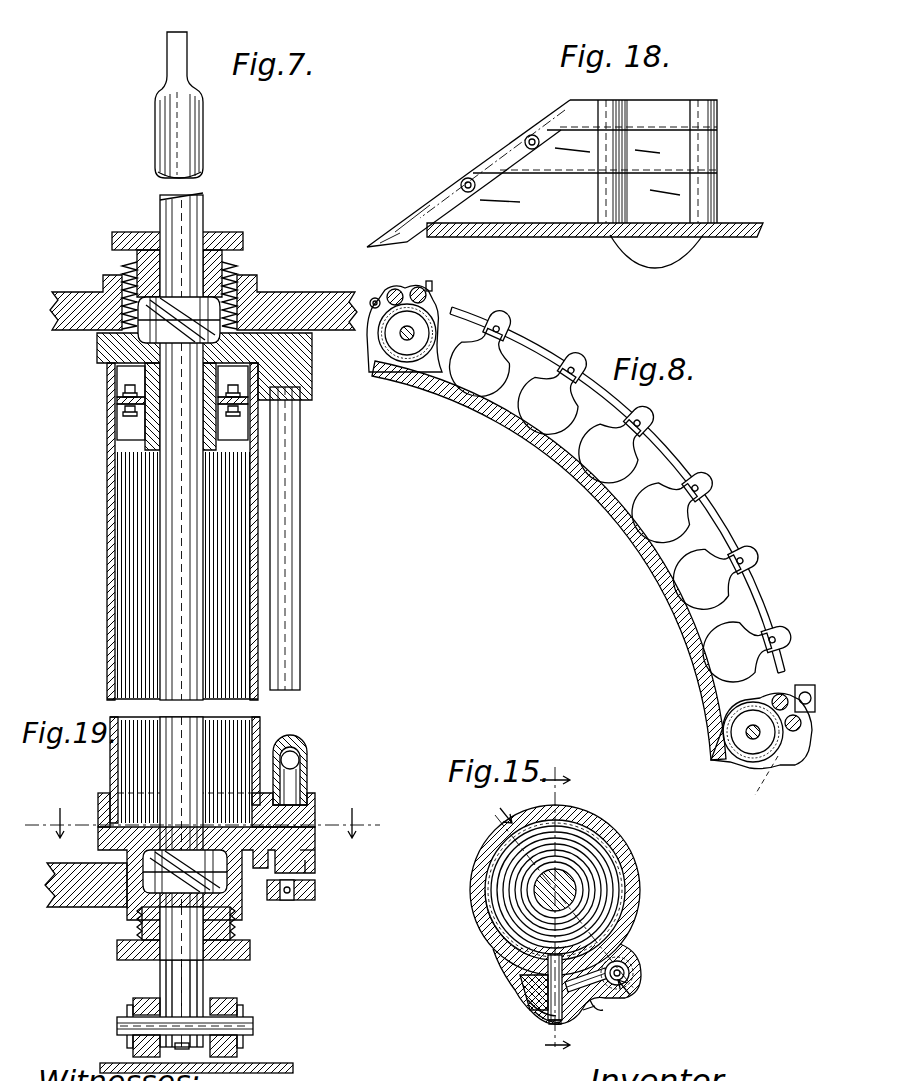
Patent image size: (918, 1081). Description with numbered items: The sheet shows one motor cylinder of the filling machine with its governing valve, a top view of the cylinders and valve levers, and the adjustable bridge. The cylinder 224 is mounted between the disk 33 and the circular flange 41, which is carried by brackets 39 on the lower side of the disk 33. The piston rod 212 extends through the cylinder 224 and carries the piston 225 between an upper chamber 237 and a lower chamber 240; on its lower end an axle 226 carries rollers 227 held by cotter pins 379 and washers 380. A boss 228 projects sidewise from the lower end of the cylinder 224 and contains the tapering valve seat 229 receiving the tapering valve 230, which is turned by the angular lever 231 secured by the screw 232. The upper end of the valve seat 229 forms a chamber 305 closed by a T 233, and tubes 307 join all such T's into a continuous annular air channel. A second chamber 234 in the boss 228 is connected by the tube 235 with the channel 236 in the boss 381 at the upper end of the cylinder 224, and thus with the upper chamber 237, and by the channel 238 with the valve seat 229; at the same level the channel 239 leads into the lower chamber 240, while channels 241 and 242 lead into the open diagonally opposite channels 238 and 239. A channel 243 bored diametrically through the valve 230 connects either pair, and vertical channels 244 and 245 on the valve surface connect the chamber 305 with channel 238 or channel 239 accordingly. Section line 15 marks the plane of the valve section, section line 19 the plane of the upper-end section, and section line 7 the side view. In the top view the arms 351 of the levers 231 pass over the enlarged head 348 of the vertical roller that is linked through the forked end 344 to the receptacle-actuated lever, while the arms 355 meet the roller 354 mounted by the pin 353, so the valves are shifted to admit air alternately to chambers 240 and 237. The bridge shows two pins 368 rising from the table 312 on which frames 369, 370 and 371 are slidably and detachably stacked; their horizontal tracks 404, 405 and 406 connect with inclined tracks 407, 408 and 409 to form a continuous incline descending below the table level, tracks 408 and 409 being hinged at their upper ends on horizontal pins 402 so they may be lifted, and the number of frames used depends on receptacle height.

In FIG. 7, the piston rod 212 is at (204, 221).
In FIG. 8, the piston rod 212 is at (412, 342).
In FIG. 15, the piston rod 212 is at (577, 877).
In FIG. 7, the disk 33 is at (273, 298).
In FIG. 7, the boss 381 is at (304, 348).
In FIG. 7, the cylinder 224 is at (140, 533).
In FIG. 15, the cylinder 224 is at (607, 885).
In FIG. 7, the upper chamber 237 is at (126, 383).
In FIG. 7, the piston 225 is at (147, 426).
In FIG. 7, the channel 236 is at (272, 382).
In FIG. 7, the tube 235 is at (287, 594).
In FIG. 15, the tube 235 is at (628, 967).
In FIG. 19, the lower chamber 240 is at (130, 774).
In FIG. 8, the lower chamber 240 is at (398, 362).
In FIG. 19, the T 233 is at (308, 760).
In FIG. 8, the T 233 is at (506, 323).
In FIG. 19, the chamber 305 is at (288, 803).
In FIG. 19, the section line 15— 15 is at (204, 822).
In FIG. 19, the tapering valve 230 is at (297, 839).
In FIG. 19, the boss 228 is at (313, 853).
In FIG. 15, the boss 228 is at (601, 999).
In FIG. 19, the tapering valve seat 229 is at (310, 870).
In FIG. 19, the angular lever 231 is at (313, 896).
In FIG. 19, the screw 232 is at (286, 906).
In FIG. 19, the circular flange 41 is at (86, 907).
In FIG. 19, the rollers 227 is at (140, 1000).
In FIG. 19, the cotter pins 379 is at (127, 1020).
In FIG. 19, the axle 226 is at (254, 1028).
In FIG. 19, the washers 380 is at (131, 1053).
In FIG. 18, the table 312 is at (745, 233).
In FIG. 18, the frame 369 is at (672, 108).
In FIG. 18, the frame 370 is at (710, 154).
In FIG. 18, the frame 371 is at (705, 201).
In FIG. 18, the horizontal track 405 is at (630, 128).
In FIG. 18, the horizontal track 404 is at (650, 105).
In FIG. 18, the inclined track 407 is at (565, 105).
In FIG. 18, the inclined track 408 is at (493, 157).
In FIG. 18, the horizontal pins 402 is at (530, 137).
In FIG. 18, the inclined track 409 is at (418, 207).
In FIG. 18, the horizontal track 406 is at (567, 177).
In FIG. 18, the pins 368 is at (656, 262).
In FIG. 8, the brackets 39 is at (546, 462).
In FIG. 8, the tubes 307 is at (715, 523).
In FIG. 8, the pin 353 is at (395, 289).
In FIG. 8, the roller 354 is at (372, 298).
In FIG. 8, the arms of angular levers 351 is at (433, 286).
In FIG. 15, the arms of angular levers 351 is at (590, 1013).
In FIG. 8, the arms of angular levers 355 is at (559, 573).
In FIG. 15, the arms of angular levers 355 is at (515, 947).
In FIG. 8, the forked end 344 is at (796, 746).
In FIG. 8, the enlarged head 348 is at (788, 703).
In FIG. 15, the vertical channel 245 is at (628, 940).
In FIG. 15, the channel 239 is at (545, 970).
In FIG. 15, the vertical channel 244 is at (525, 993).
In FIG. 15, the channel 238 is at (620, 958).
In FIG. 15, the chamber 234 is at (636, 979).
In FIG. 15, the channel 241 is at (530, 1012).
In FIG. 15, the channel 243 is at (540, 1022).
In FIG. 15, the channel 242 is at (556, 1031).
In FIG. 15, the section line 19— 19 is at (558, 915).
In FIG. 15, the section line 7— 7 is at (568, 912).